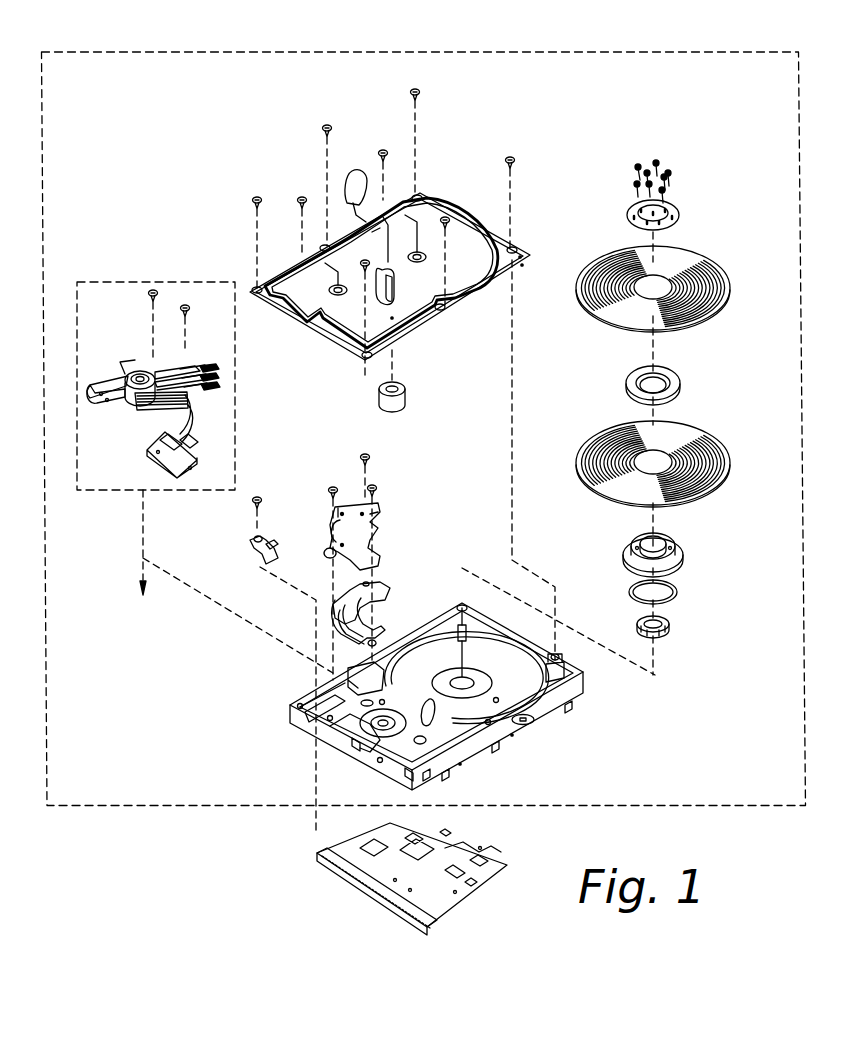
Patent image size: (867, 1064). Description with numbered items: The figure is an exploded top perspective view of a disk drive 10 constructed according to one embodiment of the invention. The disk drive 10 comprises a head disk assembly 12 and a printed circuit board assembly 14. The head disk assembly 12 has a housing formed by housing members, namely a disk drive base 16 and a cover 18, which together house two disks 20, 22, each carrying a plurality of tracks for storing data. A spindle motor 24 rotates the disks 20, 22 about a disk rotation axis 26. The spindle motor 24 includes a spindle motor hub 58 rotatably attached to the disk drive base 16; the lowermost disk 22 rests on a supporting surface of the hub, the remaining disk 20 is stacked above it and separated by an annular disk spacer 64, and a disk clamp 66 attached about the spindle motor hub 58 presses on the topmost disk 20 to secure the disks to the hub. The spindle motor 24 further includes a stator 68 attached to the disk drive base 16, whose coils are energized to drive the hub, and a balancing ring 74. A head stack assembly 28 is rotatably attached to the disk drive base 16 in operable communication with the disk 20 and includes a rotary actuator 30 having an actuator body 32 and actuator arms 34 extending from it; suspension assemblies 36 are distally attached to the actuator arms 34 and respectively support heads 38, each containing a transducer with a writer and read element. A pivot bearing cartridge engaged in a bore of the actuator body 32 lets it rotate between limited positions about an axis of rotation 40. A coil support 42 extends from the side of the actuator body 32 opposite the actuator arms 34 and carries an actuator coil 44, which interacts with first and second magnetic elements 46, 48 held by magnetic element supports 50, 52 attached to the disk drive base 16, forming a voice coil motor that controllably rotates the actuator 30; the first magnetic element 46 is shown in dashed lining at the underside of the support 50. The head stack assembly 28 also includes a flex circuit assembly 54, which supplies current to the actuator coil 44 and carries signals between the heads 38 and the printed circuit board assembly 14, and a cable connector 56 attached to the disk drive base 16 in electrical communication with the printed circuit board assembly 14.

The disk drive 10 is at (222, 46).
The head disk assembly 12 is at (176, 806).
The printed circuit board assembly 14 is at (492, 874).
The disk drive base 16 is at (476, 760).
The cover 18 is at (463, 281).
The disk 20 is at (596, 266).
The disk 22 is at (596, 441).
The spindle motor 24 is at (695, 586).
The disk rotation axis 26 is at (657, 657).
The head stack assembly 28 is at (163, 366).
The rotary actuator 30 is at (140, 370).
The actuator body 32 is at (128, 375).
The actuator arms 34 is at (168, 372).
The suspension assemblies 36 is at (190, 370).
The heads 38 is at (220, 378).
The axis of rotation 40 is at (144, 513).
The coil support 42 is at (88, 392).
The actuator coil 44 is at (97, 387).
The first magnetic element 46 is at (366, 567).
The second magnetic element 48 is at (347, 608).
The magnetic element support 50 is at (340, 530).
The magnetic element support 52 is at (348, 622).
The flex circuit assembly 54 is at (189, 409).
The cable connector 56 is at (162, 463).
The spindle motor hub 58 is at (684, 553).
The annular disk spacer 64 is at (681, 385).
The disk clamp 66 is at (680, 216).
The stator 68 is at (676, 629).
The balancing ring 74 is at (680, 592).